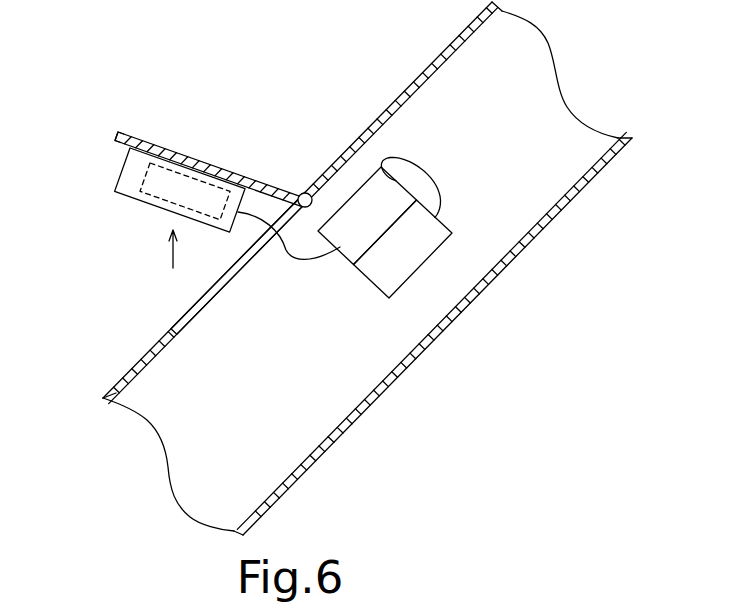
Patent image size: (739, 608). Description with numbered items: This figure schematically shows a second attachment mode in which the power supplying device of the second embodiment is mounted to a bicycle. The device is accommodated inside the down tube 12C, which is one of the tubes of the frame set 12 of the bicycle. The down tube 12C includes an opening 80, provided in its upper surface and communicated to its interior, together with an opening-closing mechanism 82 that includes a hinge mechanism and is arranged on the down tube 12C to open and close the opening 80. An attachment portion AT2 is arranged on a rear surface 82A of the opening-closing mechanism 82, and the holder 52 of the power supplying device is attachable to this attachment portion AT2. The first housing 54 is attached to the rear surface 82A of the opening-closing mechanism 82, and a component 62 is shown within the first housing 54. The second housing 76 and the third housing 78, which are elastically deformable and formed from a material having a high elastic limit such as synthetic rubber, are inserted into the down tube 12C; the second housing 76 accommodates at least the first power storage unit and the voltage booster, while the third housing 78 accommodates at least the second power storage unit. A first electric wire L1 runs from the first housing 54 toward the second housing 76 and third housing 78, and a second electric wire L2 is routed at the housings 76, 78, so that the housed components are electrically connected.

The down tube 12C is at (367, 268).
The frame set 12 is at (452, 30).
The opening 80 is at (177, 317).
The opening-closing mechanism 82 is at (181, 155).
The rear surface 82A is at (118, 141).
The attachment portion AT2 is at (205, 163).
The first housing 54 is at (118, 175).
The battery 62 is at (153, 208).
The holder 52 is at (171, 266).
The second housing 76 is at (391, 175).
The third housing 78 is at (447, 227).
The first electric wire L1 is at (300, 262).
The second electric wire L2 is at (449, 167).